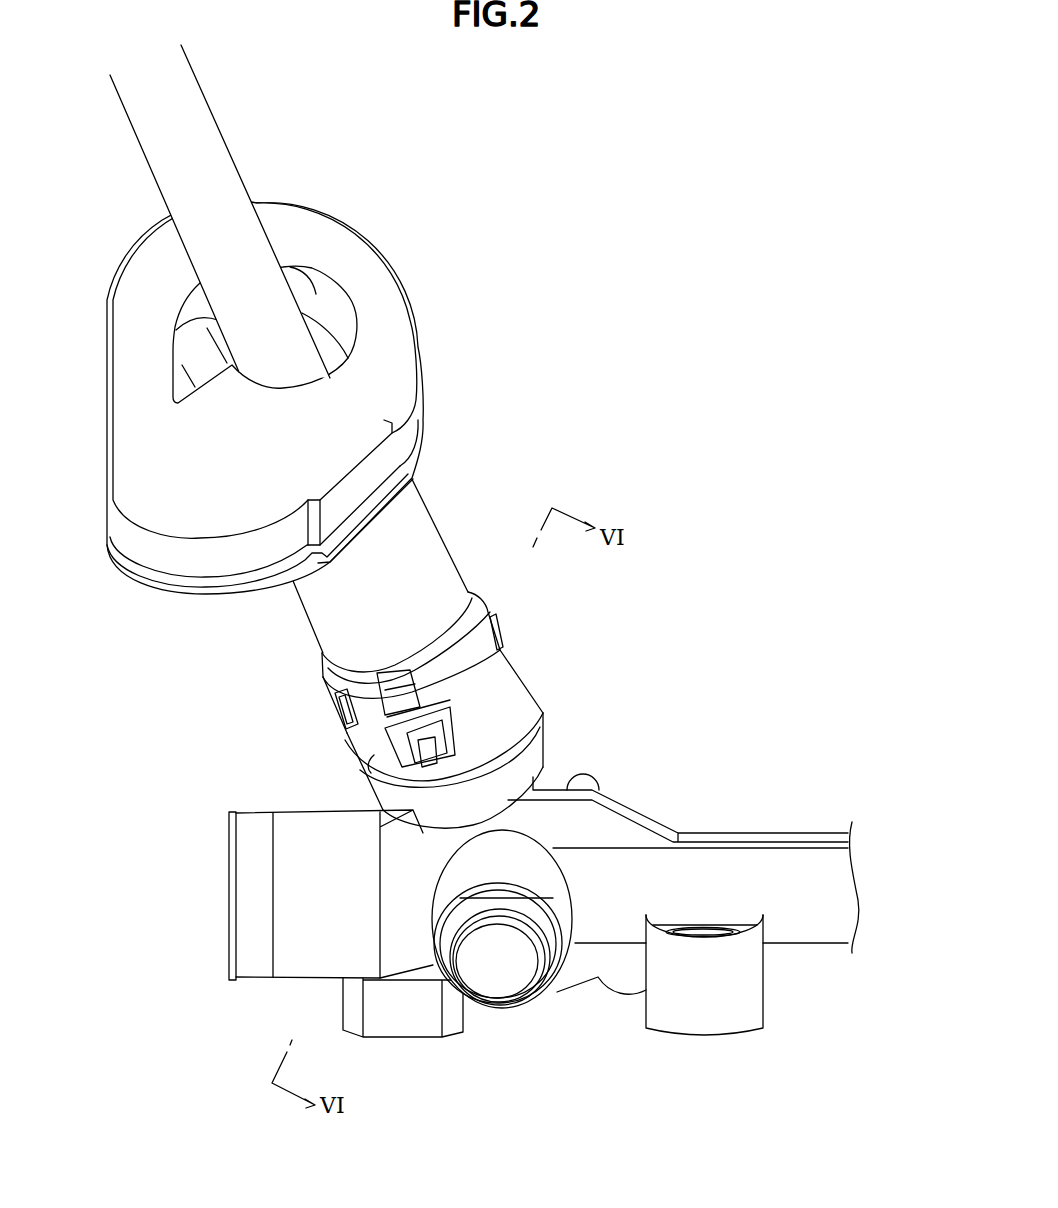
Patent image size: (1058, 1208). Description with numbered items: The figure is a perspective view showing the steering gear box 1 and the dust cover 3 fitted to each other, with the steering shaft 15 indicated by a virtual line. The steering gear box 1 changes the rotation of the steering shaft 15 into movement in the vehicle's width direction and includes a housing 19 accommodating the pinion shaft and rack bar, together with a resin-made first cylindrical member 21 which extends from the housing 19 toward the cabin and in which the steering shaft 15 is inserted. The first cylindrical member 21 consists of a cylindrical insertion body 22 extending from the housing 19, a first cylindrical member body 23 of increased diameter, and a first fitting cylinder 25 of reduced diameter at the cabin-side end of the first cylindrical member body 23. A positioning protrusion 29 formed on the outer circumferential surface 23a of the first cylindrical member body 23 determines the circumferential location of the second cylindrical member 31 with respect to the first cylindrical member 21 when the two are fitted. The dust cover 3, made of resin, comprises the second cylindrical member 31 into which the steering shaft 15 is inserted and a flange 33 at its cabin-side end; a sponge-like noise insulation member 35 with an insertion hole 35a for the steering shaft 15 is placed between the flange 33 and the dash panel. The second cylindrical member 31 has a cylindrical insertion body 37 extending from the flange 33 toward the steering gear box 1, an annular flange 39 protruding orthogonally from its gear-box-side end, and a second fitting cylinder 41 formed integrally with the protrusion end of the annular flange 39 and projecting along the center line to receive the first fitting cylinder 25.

The steering gear box 1 is at (573, 990).
The dust cover 3 is at (449, 540).
The steering shaft 15 is at (206, 100).
The housing 19 is at (500, 1010).
The first cylindrical member 21 is at (438, 695).
The insertion body 22 is at (533, 745).
The first cylindrical member body 23 is at (409, 706).
The outer circumferential surface 23a is at (374, 755).
The first fitting cylinder 25 is at (521, 610).
The positioning protrusion 29 is at (545, 778).
The second cylindrical member 31 is at (336, 679).
The flange 33 is at (160, 593).
The noise insulation member 35 is at (274, 412).
The insertion hole 35a is at (318, 293).
The insertion body 37 is at (298, 622).
The annular flange 39 is at (340, 676).
The second fitting cylinder 41 is at (355, 712).